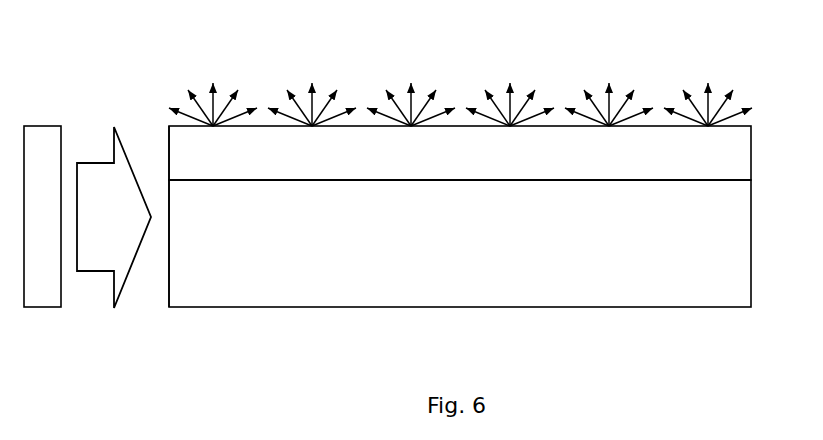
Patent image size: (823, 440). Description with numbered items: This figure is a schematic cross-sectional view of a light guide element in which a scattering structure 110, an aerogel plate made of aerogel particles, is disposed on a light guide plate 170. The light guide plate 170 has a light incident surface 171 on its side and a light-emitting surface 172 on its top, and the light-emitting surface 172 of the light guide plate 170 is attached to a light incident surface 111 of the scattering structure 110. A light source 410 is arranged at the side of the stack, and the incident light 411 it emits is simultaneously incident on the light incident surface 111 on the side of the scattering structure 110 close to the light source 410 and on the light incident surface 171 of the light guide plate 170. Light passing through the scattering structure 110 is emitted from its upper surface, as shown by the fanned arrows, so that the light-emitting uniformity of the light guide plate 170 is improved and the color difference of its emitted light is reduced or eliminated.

The scattering structure 110 is at (460, 114).
The light incident surface 111 is at (460, 114).
The light guide plate 170 is at (460, 279).
The light incident surface 171 is at (217, 252).
The light-emitting surface 172 is at (460, 279).
The light source 410 is at (75, 252).
The incident light 411 is at (166, 161).